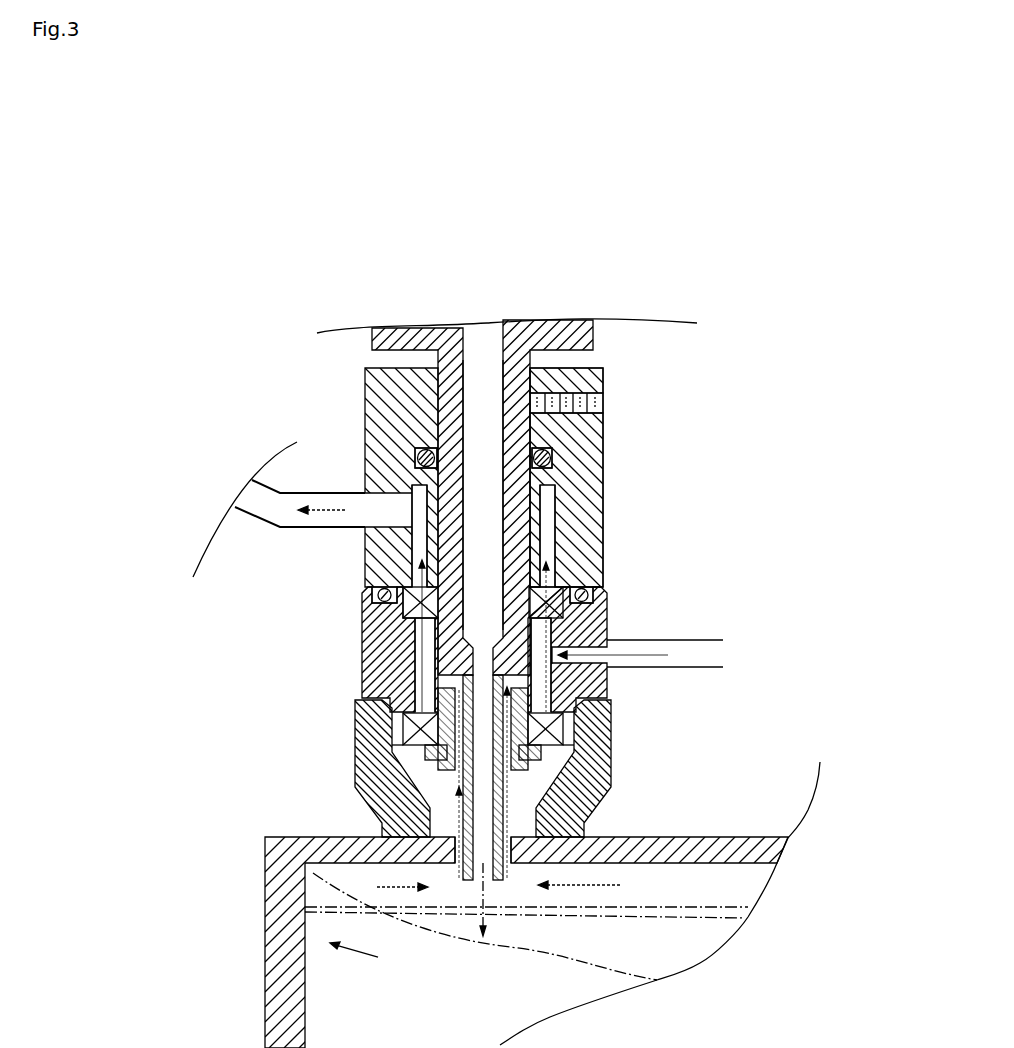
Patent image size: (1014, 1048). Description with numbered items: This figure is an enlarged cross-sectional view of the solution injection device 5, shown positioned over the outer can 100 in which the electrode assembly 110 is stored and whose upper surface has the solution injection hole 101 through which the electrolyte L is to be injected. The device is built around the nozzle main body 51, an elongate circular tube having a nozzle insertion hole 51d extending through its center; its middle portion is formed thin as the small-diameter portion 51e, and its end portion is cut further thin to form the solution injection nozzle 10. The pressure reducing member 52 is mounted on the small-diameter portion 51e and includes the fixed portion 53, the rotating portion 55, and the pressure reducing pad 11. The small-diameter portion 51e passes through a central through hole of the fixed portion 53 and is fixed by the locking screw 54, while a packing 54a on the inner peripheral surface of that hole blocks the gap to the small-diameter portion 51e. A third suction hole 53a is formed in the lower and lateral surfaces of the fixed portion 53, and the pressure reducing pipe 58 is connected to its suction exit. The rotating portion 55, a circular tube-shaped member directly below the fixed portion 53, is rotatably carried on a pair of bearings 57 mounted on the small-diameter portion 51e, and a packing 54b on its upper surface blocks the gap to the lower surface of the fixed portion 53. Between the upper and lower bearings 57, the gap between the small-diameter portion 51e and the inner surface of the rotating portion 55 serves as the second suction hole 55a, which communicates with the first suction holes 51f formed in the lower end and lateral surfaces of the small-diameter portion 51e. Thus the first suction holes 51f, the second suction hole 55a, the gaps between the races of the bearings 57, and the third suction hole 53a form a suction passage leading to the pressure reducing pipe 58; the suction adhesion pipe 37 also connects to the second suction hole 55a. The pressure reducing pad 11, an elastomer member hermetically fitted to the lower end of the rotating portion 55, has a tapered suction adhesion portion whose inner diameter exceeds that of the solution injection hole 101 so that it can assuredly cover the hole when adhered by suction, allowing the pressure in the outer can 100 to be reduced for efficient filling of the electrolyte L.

The solution injection device 5 is at (612, 436).
The solution injection nozzle 10 is at (505, 783).
The pressure reducing pad 11 is at (600, 733).
The suction adhesion pipe 37 is at (648, 663).
The nozzle main body 51 is at (557, 340).
The nozzle insertion hole 51d is at (503, 357).
The small-diameter portion 51e is at (543, 545).
The first suction holes 51f is at (458, 682).
The pressure reducing member 52 is at (612, 371).
The fixed portion 53 is at (590, 492).
The third suction hole 53a is at (420, 538).
The locking screw 54 is at (588, 402).
The packing 54a is at (552, 462).
The packing 54b is at (600, 596).
The rotating portion 55 is at (372, 657).
The second suction hole 55a is at (540, 652).
The bearings 57 is at (407, 587).
The pressure reducing pipe 58 is at (252, 508).
The outer can 100 is at (275, 928).
The solution injection hole 101 is at (565, 837).
The electrode assembly 110 is at (332, 975).
The electrolyte L is at (481, 931).